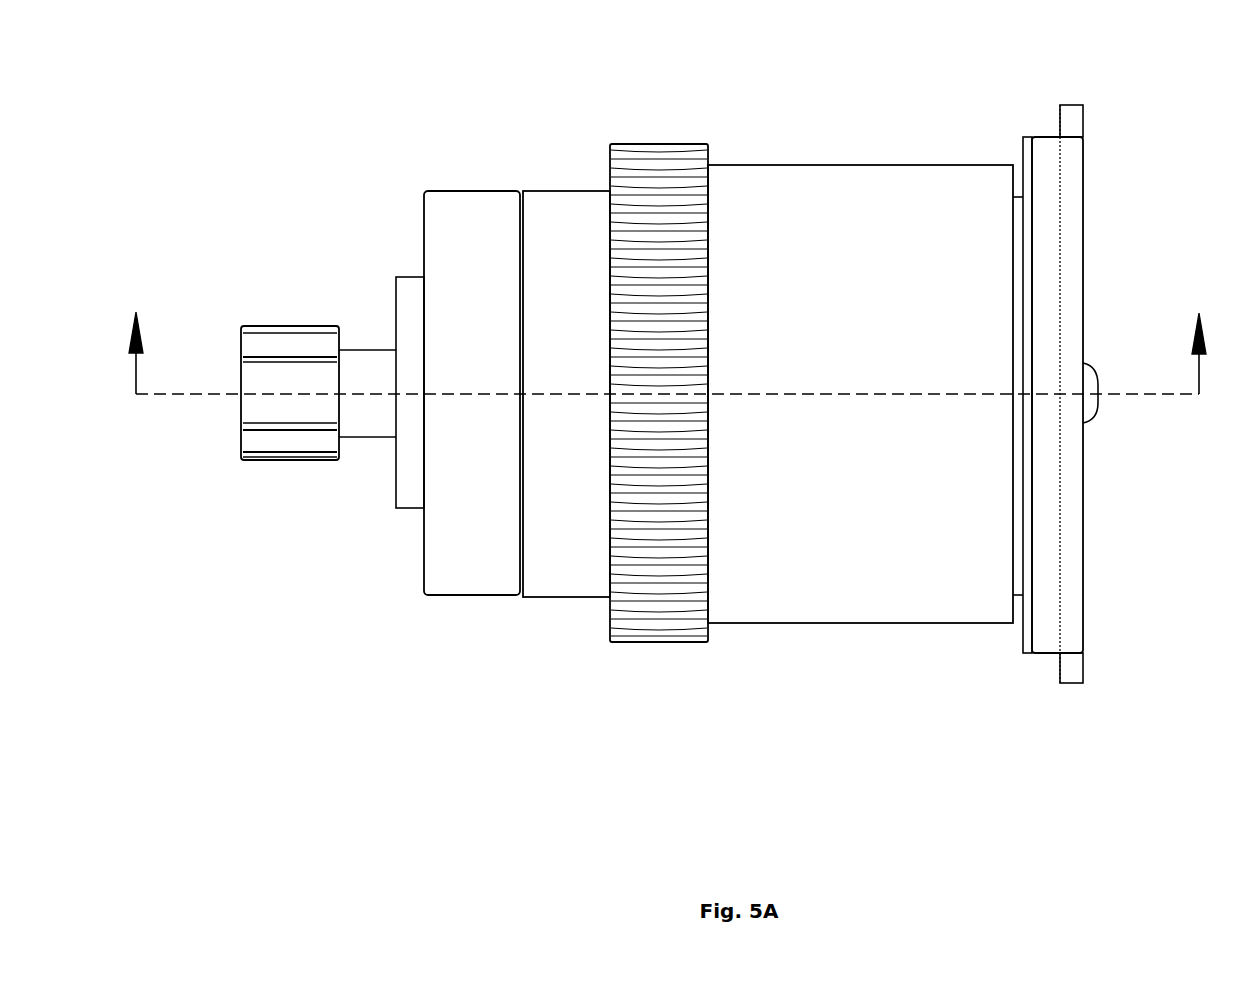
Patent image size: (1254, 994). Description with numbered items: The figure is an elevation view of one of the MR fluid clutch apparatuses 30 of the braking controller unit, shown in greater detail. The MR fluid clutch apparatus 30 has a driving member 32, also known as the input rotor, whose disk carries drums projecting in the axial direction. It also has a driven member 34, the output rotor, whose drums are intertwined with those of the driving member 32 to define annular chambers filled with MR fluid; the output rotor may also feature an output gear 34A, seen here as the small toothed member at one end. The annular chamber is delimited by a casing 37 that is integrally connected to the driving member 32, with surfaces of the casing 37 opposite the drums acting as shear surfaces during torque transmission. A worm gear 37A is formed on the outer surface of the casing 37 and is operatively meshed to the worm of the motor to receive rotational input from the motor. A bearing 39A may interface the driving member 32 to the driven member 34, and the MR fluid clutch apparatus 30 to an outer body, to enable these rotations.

The MR fluid clutch apparatus 30 is at (322, 127).
The driving member 32 is at (810, 407).
The driven member 34 is at (287, 371).
The output gear 34A is at (267, 466).
The casing 37 is at (911, 160).
The worm gear 37A is at (644, 143).
The bearing 39A is at (458, 572).